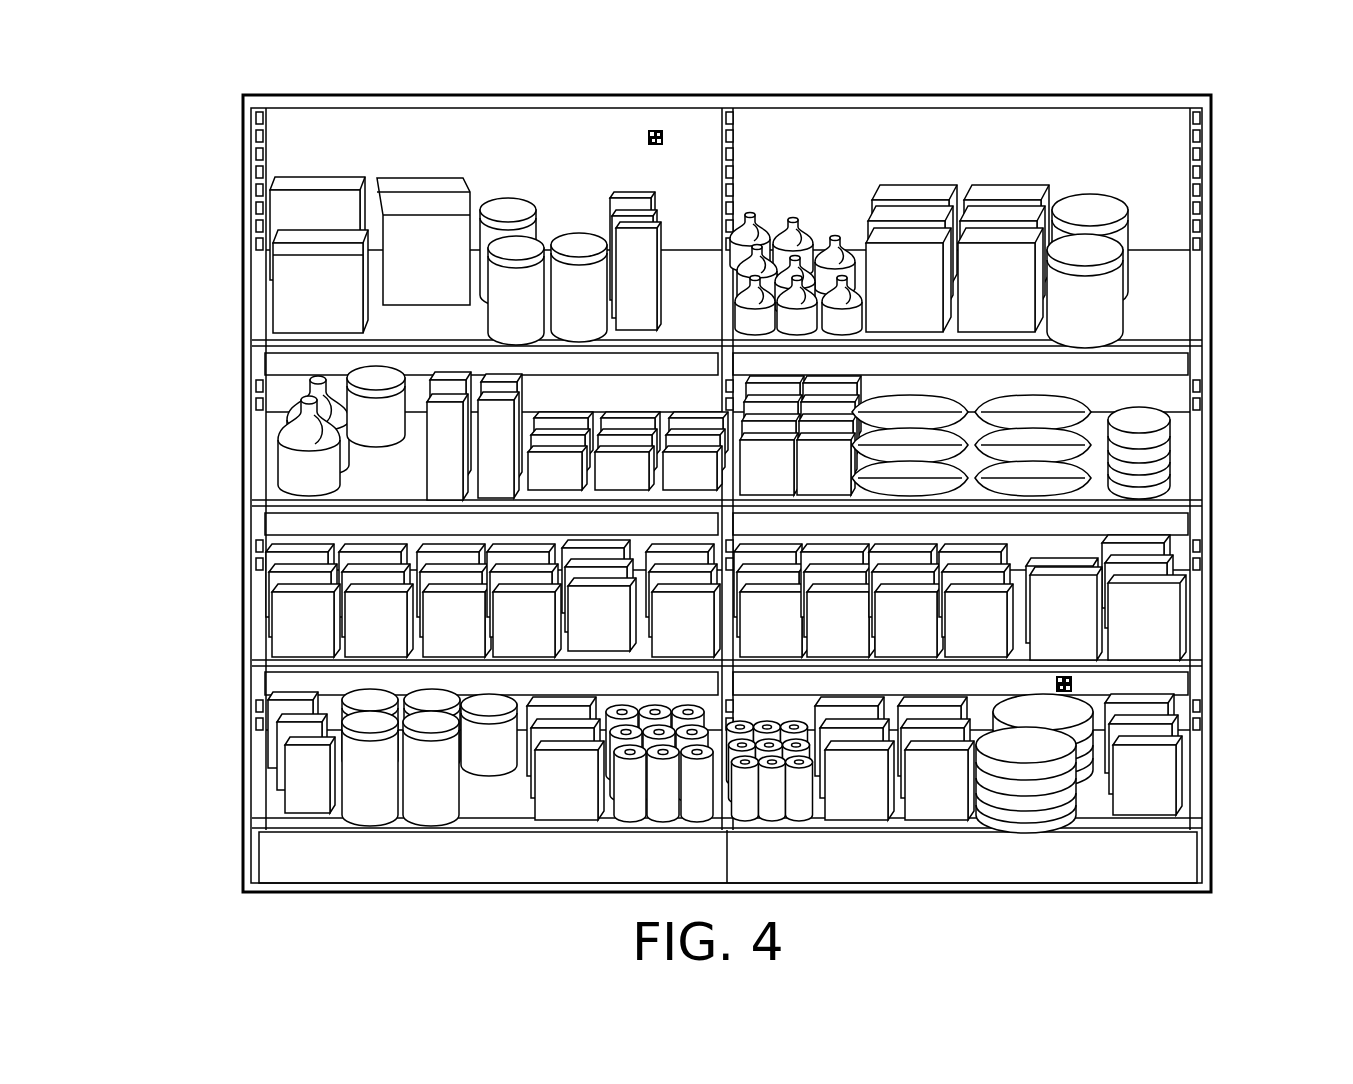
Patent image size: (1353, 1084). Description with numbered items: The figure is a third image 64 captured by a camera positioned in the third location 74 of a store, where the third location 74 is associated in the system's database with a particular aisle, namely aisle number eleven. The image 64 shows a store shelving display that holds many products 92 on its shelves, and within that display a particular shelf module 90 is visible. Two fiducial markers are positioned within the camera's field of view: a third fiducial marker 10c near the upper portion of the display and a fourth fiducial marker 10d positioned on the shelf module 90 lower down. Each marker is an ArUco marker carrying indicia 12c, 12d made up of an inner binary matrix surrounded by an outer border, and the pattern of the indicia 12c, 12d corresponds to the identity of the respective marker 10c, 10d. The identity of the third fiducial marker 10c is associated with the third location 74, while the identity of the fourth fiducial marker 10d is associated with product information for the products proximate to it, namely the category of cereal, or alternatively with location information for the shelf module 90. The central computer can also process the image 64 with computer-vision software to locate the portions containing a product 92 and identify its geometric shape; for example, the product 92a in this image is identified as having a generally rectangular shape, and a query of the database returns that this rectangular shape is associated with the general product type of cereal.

The third image 64 is at (322, 94).
The third location 74 is at (905, 100).
The shelf module 90 is at (1165, 160).
The third fiducial marker 10c is at (645, 136).
The indicia 12c is at (656, 130).
The fourth fiducial marker 10d is at (1072, 688).
The indicia 12d is at (1077, 693).
The product 92 is at (297, 775).
The product 92a is at (1070, 620).